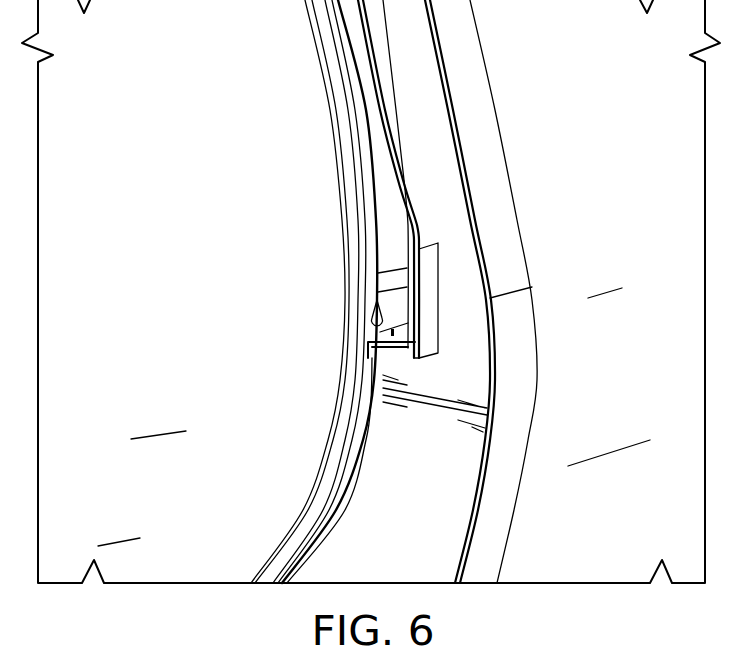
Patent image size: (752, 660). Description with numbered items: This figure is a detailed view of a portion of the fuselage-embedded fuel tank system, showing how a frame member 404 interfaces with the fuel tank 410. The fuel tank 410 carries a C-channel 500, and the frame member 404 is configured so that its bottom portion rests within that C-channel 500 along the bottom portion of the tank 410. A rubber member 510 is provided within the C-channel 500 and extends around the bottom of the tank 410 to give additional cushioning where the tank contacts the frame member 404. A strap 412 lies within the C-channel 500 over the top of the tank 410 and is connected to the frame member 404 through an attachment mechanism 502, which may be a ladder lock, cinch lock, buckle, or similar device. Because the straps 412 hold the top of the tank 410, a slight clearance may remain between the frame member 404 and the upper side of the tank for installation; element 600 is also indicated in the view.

The frame member 404 is at (385, 478).
The fuel tank 410 is at (589, 167).
The strap 412 is at (390, 223).
The C-channel 500 is at (340, 412).
The attachment mechanism 502 is at (338, 320).
The rubber member 510 is at (356, 88).
The clip 600 is at (398, 308).